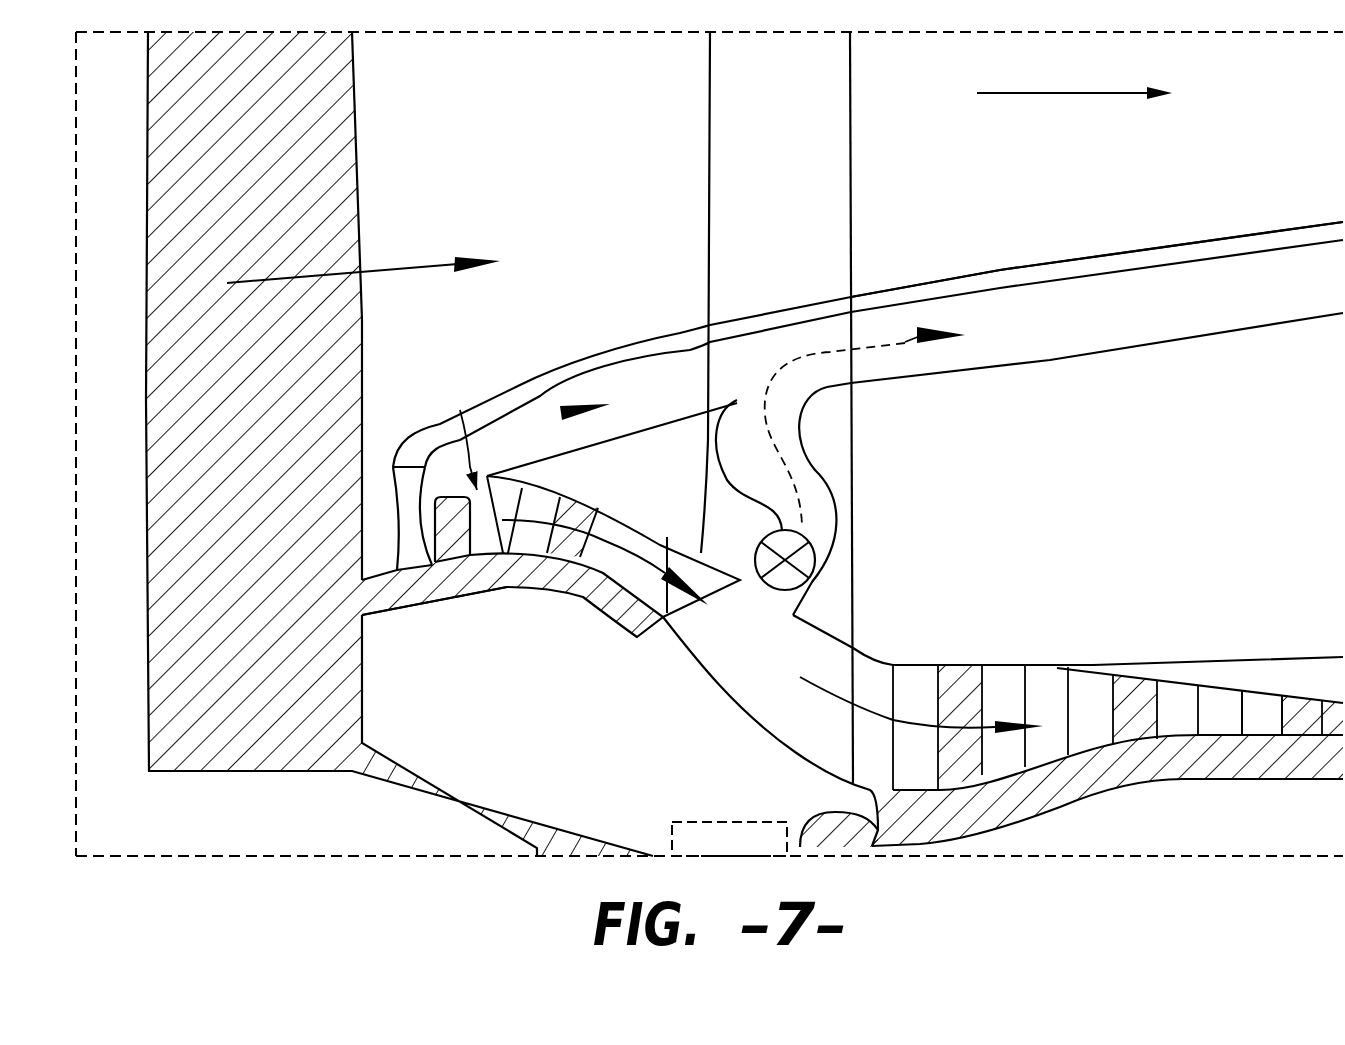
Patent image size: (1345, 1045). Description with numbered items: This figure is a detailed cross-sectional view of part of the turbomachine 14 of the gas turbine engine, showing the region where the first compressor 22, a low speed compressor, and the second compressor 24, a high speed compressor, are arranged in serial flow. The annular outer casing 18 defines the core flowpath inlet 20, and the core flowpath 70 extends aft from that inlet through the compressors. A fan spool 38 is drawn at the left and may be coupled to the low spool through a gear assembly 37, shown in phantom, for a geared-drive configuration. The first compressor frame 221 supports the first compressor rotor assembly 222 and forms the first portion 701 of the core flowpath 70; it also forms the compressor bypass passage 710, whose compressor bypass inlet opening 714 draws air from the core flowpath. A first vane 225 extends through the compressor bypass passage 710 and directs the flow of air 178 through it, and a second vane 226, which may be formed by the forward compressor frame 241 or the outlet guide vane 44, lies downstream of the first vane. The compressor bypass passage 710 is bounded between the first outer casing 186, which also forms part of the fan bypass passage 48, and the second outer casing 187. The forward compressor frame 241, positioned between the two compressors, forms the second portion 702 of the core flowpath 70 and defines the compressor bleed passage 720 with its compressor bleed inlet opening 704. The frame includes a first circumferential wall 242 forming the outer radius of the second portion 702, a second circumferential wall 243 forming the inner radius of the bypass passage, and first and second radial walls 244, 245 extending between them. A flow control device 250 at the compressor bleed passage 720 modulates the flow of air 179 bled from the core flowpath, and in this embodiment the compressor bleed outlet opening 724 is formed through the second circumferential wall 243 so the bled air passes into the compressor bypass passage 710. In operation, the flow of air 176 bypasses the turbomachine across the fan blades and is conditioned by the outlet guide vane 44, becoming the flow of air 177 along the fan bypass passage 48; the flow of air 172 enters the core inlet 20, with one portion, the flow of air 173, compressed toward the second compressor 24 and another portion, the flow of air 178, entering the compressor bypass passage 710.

The turbomachine 14 is at (1191, 580).
The outer casing 18 is at (1104, 390).
The core flowpath inlet 20 is at (384, 505).
The first compressor 22 is at (437, 632).
The second compressor 24 is at (1101, 650).
The gear assembly 37 is at (718, 820).
The fan spool 38 is at (240, 773).
The outlet guide vane 44 is at (852, 175).
The fan bypass passage 48 is at (1070, 165).
The core flowpath 70 is at (1237, 680).
The flow of air 172 is at (633, 557).
The flow of air 173 is at (962, 727).
The flow of air 176 is at (383, 268).
The flow of air 177 is at (1040, 88).
The flow of air 178 is at (516, 436).
The flow of air 179 is at (900, 340).
The first outer casing 186 is at (962, 288).
The second outer casing 187 is at (1248, 333).
The first compressor frame 221 is at (607, 326).
The first compressor rotor assembly 222 is at (450, 505).
The first vane 225 is at (543, 410).
The second vane 226 is at (700, 365).
The forward compressor frame 241 is at (880, 411).
The first circumferential wall 242 is at (840, 613).
The second circumferential wall 243 is at (833, 383).
The first radial wall 244 is at (707, 430).
The second radial wall 245 is at (855, 455).
The flow control device 250 is at (815, 565).
The first portion of the core flowpath 701 is at (537, 506).
The second portion of the core flowpath 702 is at (758, 688).
The compressor bleed inlet opening 704 is at (760, 620).
The compressor bypass passage 710 is at (1128, 300).
The compressor bypass inlet opening 714 is at (496, 550).
The compressor bleed passage 720 is at (836, 527).
The compressor bleed outlet opening 724 is at (755, 385).